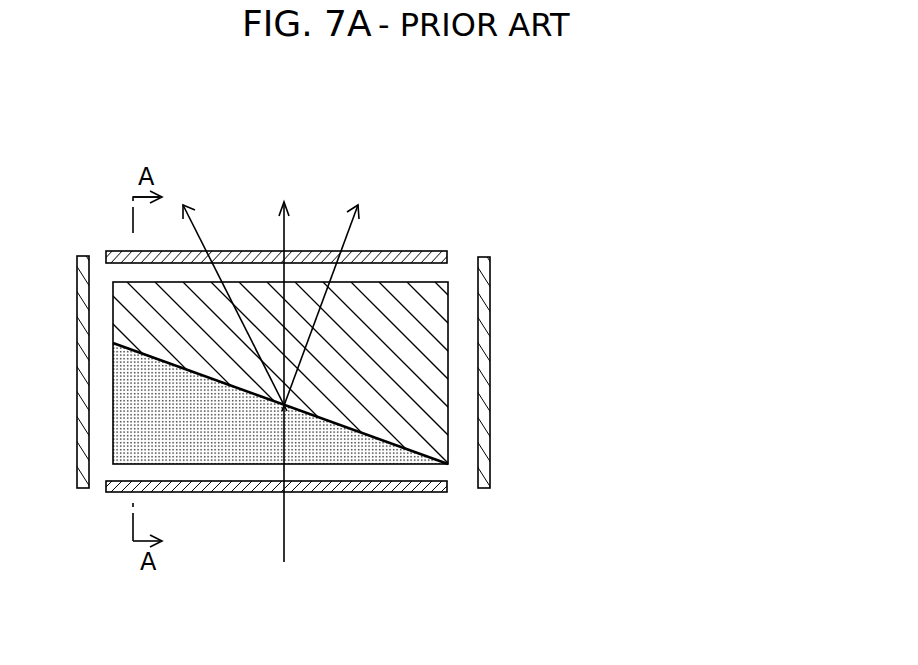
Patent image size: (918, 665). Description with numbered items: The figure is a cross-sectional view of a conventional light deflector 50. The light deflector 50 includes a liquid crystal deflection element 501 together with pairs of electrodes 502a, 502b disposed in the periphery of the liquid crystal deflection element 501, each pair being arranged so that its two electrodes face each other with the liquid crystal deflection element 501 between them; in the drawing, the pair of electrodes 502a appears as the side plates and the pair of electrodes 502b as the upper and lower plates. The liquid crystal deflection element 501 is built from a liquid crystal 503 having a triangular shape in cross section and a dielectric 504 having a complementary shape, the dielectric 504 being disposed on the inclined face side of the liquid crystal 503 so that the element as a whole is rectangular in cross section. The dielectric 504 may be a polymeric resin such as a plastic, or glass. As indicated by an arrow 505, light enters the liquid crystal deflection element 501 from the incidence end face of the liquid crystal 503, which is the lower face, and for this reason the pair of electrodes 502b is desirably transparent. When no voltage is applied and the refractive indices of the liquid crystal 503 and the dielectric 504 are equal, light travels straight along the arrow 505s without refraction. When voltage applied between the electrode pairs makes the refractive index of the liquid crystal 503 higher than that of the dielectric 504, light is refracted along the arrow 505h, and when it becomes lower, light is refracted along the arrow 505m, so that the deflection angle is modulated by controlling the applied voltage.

The light deflector 50 is at (98, 138).
The liquid crystal deflection element 501 is at (113, 310).
The pair of electrodes 502a is at (490, 488).
The pair of electrodes 502b is at (390, 492).
The liquid crystal 503 is at (227, 442).
The dielectric 504 is at (302, 302).
The arrow 505 is at (283, 540).
The arrow 505h is at (203, 222).
The arrow 505s is at (280, 226).
The arrow 505m is at (352, 233).